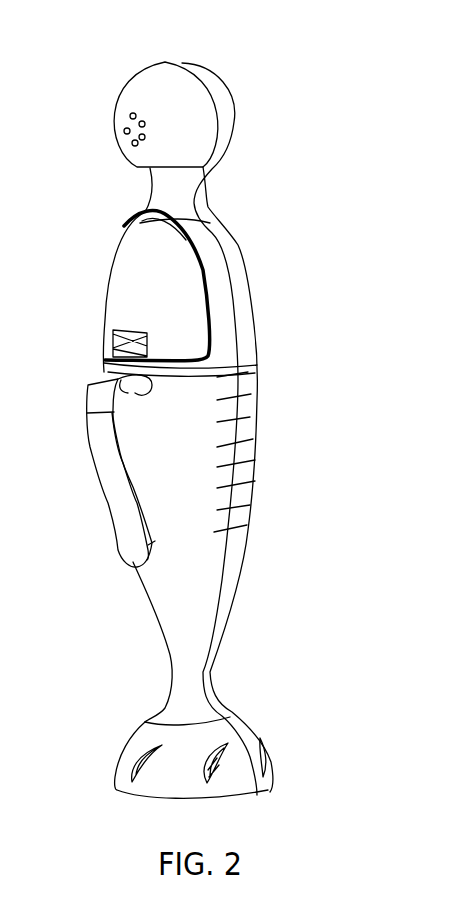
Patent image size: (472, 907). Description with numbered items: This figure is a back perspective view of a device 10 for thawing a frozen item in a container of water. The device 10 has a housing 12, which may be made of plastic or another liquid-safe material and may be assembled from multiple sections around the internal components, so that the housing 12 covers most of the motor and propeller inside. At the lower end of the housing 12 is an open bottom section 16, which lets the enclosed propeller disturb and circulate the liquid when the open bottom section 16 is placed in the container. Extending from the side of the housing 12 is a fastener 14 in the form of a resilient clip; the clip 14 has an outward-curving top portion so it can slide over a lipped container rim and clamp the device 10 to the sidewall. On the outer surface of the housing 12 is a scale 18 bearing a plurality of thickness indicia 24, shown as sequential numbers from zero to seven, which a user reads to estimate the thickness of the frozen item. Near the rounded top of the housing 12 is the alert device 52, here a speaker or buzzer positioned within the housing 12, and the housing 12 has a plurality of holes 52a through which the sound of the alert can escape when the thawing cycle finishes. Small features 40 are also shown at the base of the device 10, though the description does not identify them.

The device 10 is at (224, 419).
The housing 12 is at (258, 340).
The fastener 14 is at (122, 495).
The open bottom section 16 is at (185, 750).
The scale 18 is at (289, 455).
The thickness indicia 24 is at (257, 438).
The feet 40 is at (132, 783).
The alert device 52 is at (136, 83).
The holes 52a is at (133, 113).